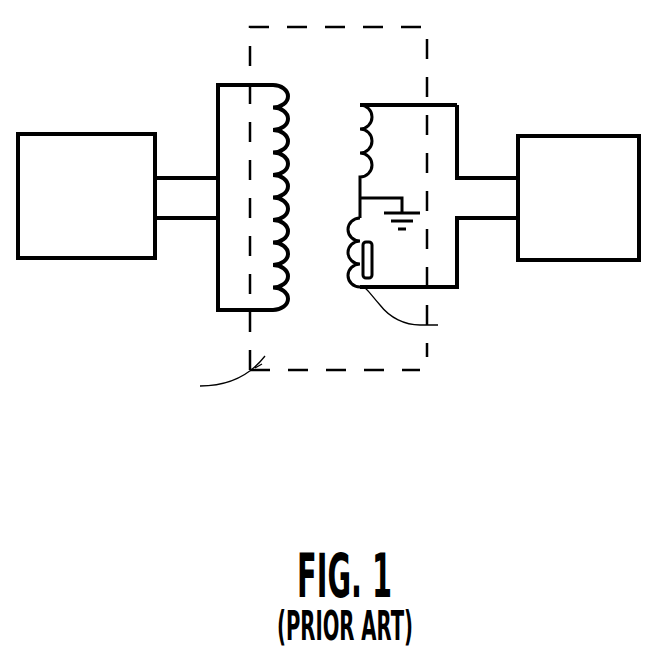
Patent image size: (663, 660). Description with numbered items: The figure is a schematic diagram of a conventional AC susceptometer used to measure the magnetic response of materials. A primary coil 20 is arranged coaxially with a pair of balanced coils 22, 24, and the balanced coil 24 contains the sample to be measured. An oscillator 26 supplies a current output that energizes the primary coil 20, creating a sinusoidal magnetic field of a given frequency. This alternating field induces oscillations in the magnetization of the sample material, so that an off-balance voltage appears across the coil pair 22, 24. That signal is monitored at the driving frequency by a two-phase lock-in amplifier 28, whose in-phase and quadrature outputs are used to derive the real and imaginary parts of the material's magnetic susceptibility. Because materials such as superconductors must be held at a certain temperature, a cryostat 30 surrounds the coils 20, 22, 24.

The primary coil 20 is at (262, 85).
The balanced coil 22 is at (371, 140).
The balanced coil containing the sample 24 is at (368, 244).
The oscillator 26 is at (40, 133).
The two-phase lock-in amplifier 28 is at (532, 135).
The cryostat 30 is at (327, 372).